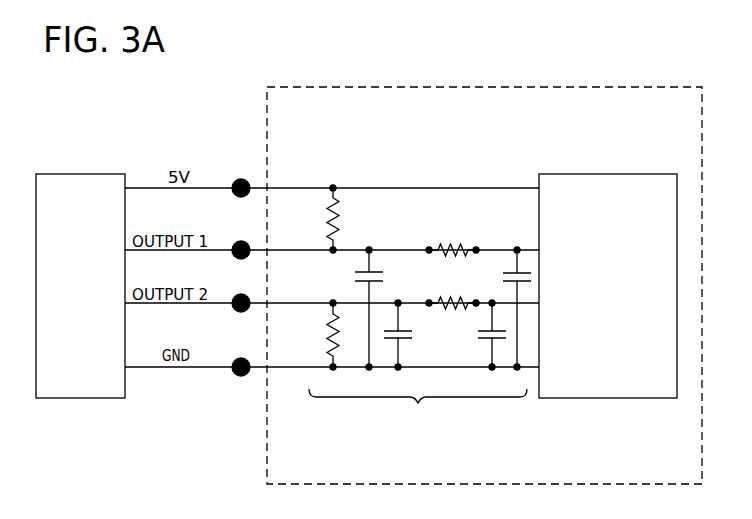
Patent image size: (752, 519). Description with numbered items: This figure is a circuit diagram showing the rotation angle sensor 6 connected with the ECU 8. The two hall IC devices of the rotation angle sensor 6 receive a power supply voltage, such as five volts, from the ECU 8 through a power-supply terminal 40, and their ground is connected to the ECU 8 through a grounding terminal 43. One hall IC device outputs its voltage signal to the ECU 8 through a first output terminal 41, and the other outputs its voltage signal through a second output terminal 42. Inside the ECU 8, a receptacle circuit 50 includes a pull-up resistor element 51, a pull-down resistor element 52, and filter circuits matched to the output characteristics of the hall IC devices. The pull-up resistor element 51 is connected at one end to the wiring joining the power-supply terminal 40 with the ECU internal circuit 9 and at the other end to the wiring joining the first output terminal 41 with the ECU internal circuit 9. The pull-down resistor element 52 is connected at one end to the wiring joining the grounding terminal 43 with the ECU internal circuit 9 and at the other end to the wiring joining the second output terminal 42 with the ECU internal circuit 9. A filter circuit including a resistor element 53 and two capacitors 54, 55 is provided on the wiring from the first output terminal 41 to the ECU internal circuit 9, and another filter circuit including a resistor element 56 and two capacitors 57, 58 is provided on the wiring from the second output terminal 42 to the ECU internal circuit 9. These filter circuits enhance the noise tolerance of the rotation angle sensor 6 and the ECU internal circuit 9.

The rotation angle sensor 6 is at (60, 174).
The ECU 8 is at (578, 87).
The ECU internal circuit 9 is at (573, 174).
The power-supply terminal 40 is at (237, 180).
The first output terminal 41 is at (235, 242).
The second output terminal 42 is at (235, 296).
The grounding terminal 43 is at (235, 359).
The receptacle circuit 50 is at (405, 306).
The pull-up resistor element 51 is at (325, 220).
The pull-down resistor element 52 is at (325, 335).
The resistor element 53 is at (443, 245).
The capacitor 54 is at (360, 286).
The capacitor 55 is at (508, 286).
The resistor element 56 is at (443, 298).
The capacitor 57 is at (412, 340).
The capacitor 58 is at (483, 343).